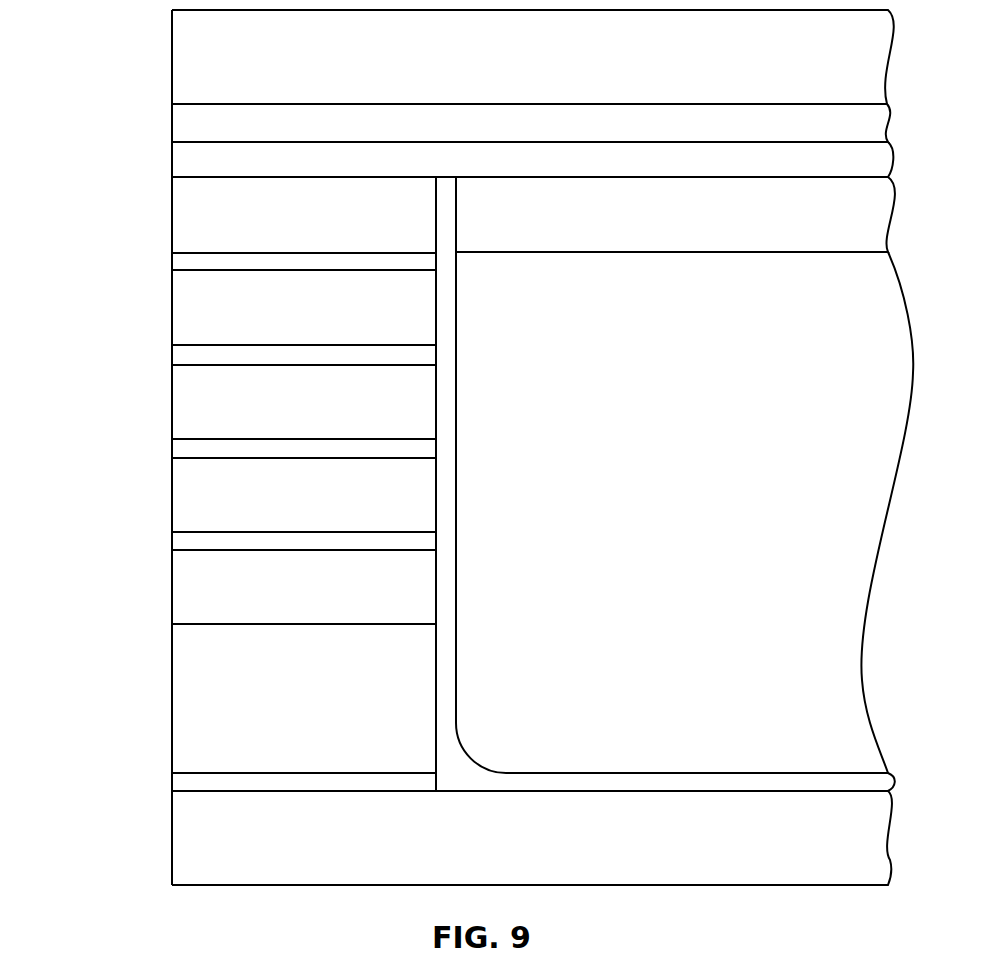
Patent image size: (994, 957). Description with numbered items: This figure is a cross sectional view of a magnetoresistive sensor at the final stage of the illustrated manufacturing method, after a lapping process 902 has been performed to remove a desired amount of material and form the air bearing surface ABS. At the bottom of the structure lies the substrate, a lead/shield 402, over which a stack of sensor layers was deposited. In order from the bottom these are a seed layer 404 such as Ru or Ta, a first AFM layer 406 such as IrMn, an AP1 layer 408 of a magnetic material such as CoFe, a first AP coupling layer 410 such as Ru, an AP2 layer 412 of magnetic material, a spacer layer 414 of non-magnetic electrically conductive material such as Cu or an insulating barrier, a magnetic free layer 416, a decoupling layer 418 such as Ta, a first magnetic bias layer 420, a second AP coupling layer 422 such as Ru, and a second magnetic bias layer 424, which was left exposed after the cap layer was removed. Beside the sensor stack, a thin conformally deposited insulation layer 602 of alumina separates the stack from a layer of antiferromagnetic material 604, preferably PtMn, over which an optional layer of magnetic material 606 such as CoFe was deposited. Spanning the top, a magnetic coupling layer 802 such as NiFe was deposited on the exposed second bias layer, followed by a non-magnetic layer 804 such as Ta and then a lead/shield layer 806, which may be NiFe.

The lead/shield layer 806 is at (445, 68).
The non-magnetic layer 804 is at (449, 125).
The magnetic coupling layer 802 is at (449, 161).
The layer of magnetic material 606 is at (668, 203).
The layer of antiferromagnetic material 604 is at (673, 457).
The insulation layer 602 is at (455, 754).
The second magnetic bias layer 424 is at (346, 213).
The second AP coupling layer 422 is at (336, 261).
The first magnetic bias layer 420 is at (343, 305).
The decoupling layer 418 is at (338, 358).
The magnetic free layer 416 is at (345, 399).
The spacer layer 414 is at (340, 445).
The AP2 layer 412 is at (343, 491).
The first AP coupling layer 410 is at (343, 545).
The AP1 layer 408 is at (343, 585).
The first AFM layer 406 is at (343, 697).
The seed layer 404 is at (347, 782).
The lead/shield 402 is at (512, 836).
The lapping process 902 is at (97, 365).
The air bearing surface ABS is at (172, 183).